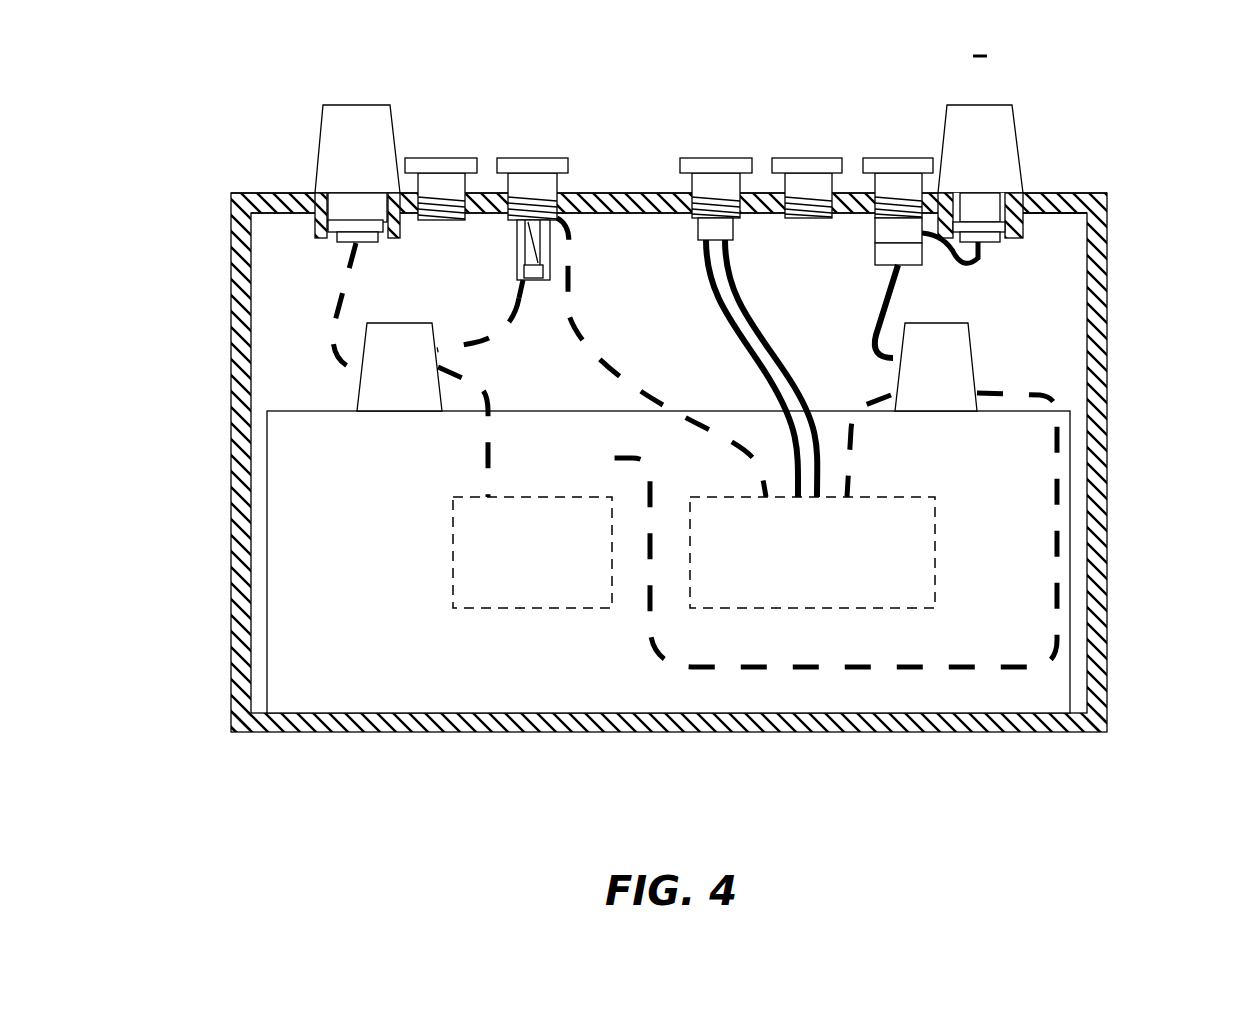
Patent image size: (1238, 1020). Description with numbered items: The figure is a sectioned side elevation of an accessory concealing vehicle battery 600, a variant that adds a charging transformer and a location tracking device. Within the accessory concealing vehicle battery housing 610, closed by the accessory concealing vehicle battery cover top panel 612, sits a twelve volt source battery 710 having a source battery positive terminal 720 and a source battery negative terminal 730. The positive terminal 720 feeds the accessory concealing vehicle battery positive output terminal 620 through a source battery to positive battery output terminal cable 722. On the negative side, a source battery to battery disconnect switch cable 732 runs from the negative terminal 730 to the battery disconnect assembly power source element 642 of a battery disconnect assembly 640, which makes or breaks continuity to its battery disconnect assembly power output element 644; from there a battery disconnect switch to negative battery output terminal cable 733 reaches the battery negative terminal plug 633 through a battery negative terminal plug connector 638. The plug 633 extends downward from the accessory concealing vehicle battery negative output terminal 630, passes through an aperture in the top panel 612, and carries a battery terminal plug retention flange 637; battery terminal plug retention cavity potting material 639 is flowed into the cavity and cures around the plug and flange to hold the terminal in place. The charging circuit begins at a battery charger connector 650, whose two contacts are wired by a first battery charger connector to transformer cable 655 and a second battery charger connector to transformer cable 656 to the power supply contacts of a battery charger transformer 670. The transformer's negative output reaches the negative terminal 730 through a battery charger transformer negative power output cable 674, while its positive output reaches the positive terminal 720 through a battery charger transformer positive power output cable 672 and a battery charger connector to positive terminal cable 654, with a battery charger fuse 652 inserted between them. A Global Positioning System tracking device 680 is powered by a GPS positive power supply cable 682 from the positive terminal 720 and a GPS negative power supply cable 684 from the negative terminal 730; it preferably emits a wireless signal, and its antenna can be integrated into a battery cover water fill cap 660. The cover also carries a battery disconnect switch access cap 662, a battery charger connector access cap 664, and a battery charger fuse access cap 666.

The accessory concealing vehicle battery 600 is at (192, 160).
The accessory concealing vehicle battery housing 610 is at (1107, 668).
The accessory concealing vehicle battery cover top panel 612 is at (668, 205).
The accessory concealing vehicle battery positive output terminal 620 is at (355, 145).
The accessory concealing vehicle battery negative output terminal 630 is at (983, 142).
The battery negative terminal plug 633 is at (978, 205).
The battery terminal plug retention flange 637 is at (997, 228).
The battery negative terminal plug connector 638 is at (983, 243).
The battery terminal plug retention cavity potting material 639 is at (1023, 220).
The battery disconnect assembly 640 is at (866, 218).
The battery disconnect assembly power source element 642 is at (885, 253).
The battery disconnect assembly power output element 644 is at (885, 230).
The battery charger connector 650 is at (710, 227).
The battery charger fuse 652 is at (533, 253).
The battery charger connector to positive terminal cable 654 is at (491, 330).
The first battery charger connector to transformer cable 655 is at (705, 272).
The second battery charger connector to transformer cable 656 is at (765, 338).
The battery cover water fill cap 660 is at (440, 158).
The battery disconnect switch access cap 662 is at (898, 158).
The battery charger connector access cap 664 is at (716, 158).
The battery charger fuse access cap 666 is at (532, 158).
The battery charger transformer 670 is at (903, 515).
The battery charger transformer positive power output cable 672 is at (615, 375).
The battery charger transformer negative power output cable 674 is at (847, 452).
The Global Positioning System (GPS) tracking device 680 is at (475, 517).
The Global Positioning System (GPS) positive power supply cable 682 is at (488, 450).
The Global Positioning System (GPS) negative power supply cable 684 is at (652, 622).
The 12 volt source battery 710 is at (943, 695).
The 12 volt source battery positive terminal 720 is at (398, 372).
The 12 volt source battery to positive battery output terminal cable 722 is at (343, 308).
The 12 volt source battery negative terminal 730 is at (940, 373).
The 12 volt source battery to battery disconnect switch cable 732 is at (898, 283).
The battery disconnect switch to negative battery output terminal cable 733 is at (972, 262).